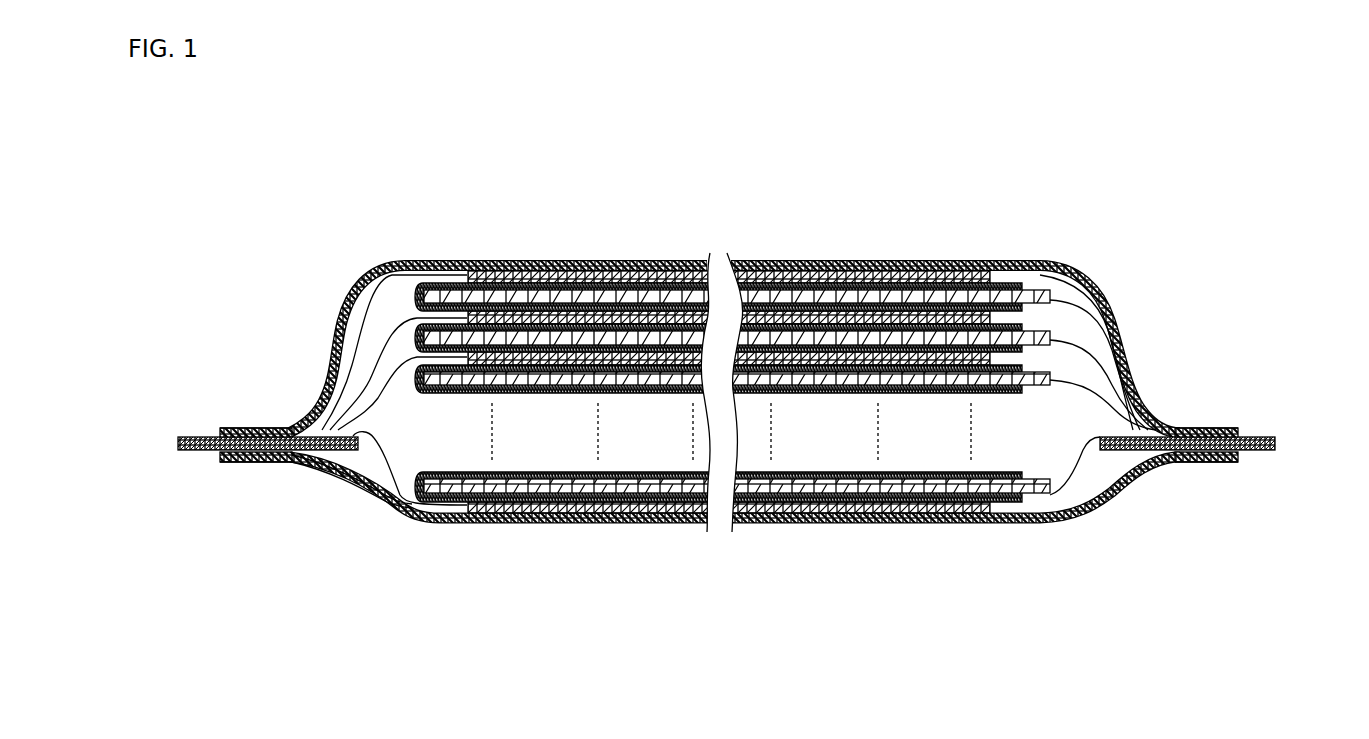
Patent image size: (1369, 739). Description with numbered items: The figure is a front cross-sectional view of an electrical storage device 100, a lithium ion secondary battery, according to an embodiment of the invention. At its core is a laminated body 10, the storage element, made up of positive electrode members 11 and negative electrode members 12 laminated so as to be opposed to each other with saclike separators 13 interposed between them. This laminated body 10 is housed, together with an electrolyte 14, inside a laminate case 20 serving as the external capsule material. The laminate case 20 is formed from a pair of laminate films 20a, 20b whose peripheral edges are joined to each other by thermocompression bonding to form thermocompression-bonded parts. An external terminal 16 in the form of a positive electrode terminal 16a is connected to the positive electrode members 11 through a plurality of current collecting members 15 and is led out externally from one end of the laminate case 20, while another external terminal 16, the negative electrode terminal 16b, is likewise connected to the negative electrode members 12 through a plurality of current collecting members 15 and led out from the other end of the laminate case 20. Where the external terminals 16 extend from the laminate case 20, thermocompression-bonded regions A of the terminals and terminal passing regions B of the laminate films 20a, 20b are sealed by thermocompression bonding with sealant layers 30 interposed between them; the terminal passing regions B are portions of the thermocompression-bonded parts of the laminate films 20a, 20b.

The electrical storage device 100 is at (348, 260).
The laminated body 10 is at (418, 418).
The positive electrode members 11 is at (660, 284).
The negative electrode members 12 is at (598, 272).
The separators 13 is at (528, 272).
The electrolyte 14 is at (1085, 470).
The current collecting members 15 is at (392, 507).
The external terminal 16 is at (729, 355).
The positive electrode terminal 16a is at (1275, 437).
The negative electrode terminal 16b is at (178, 437).
The laminate case 20 is at (460, 526).
The laminate film 20a is at (448, 262).
The laminate film 20b is at (625, 523).
The sealant layers 30 is at (270, 428).
The thermocompression-bonded regions A is at (240, 428).
The terminal passing regions B is at (237, 462).